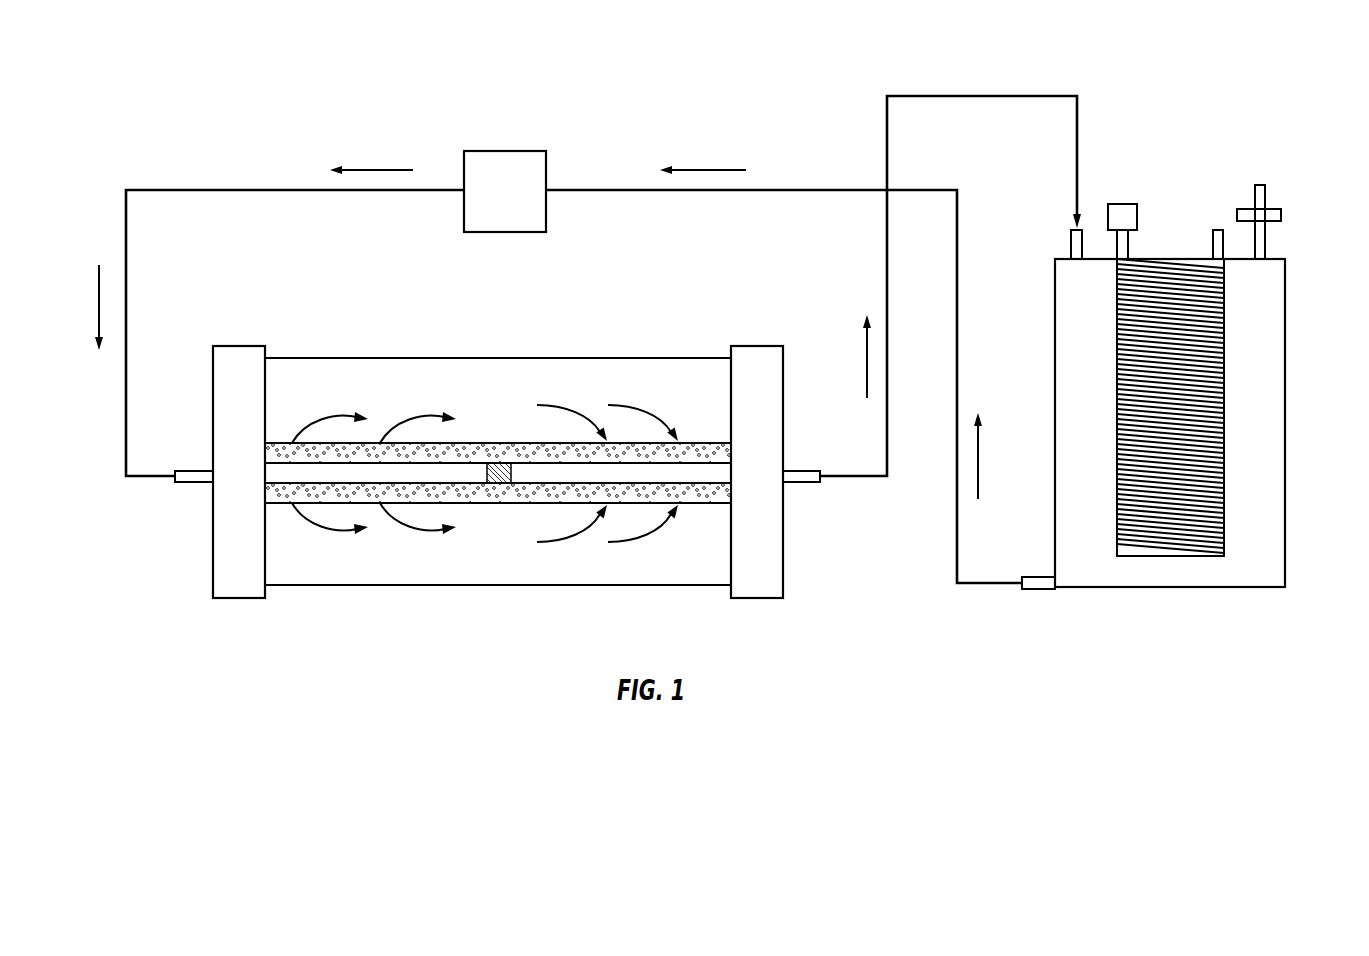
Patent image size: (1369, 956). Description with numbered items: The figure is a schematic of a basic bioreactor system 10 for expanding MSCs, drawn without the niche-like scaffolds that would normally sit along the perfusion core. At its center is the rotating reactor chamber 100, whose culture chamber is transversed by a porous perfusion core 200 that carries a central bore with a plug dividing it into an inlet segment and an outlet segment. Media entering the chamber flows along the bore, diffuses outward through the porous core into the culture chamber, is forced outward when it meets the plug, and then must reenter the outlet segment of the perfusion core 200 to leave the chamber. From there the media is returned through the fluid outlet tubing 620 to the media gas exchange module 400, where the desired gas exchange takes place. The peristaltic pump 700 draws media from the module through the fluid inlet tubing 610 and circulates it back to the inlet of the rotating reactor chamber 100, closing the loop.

The bioreactor system 10 is at (348, 100).
The rotating reactor chamber 100 is at (661, 586).
The perfusion core 200 is at (282, 520).
The media gas exchange module 400 is at (1285, 461).
The fluid inlet tubing 610 is at (126, 425).
The fluid outlet tubing 620 is at (888, 446).
The peristaltic pump 700 is at (505, 151).